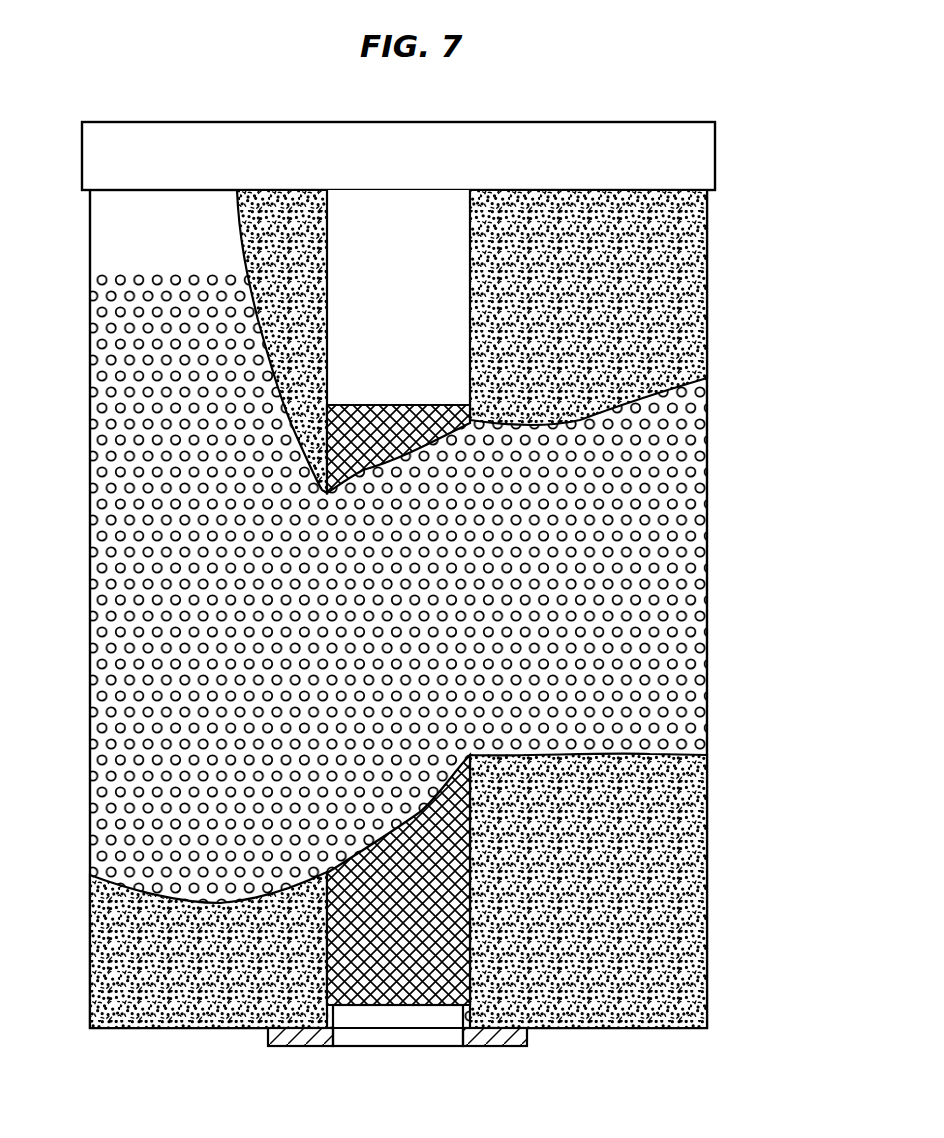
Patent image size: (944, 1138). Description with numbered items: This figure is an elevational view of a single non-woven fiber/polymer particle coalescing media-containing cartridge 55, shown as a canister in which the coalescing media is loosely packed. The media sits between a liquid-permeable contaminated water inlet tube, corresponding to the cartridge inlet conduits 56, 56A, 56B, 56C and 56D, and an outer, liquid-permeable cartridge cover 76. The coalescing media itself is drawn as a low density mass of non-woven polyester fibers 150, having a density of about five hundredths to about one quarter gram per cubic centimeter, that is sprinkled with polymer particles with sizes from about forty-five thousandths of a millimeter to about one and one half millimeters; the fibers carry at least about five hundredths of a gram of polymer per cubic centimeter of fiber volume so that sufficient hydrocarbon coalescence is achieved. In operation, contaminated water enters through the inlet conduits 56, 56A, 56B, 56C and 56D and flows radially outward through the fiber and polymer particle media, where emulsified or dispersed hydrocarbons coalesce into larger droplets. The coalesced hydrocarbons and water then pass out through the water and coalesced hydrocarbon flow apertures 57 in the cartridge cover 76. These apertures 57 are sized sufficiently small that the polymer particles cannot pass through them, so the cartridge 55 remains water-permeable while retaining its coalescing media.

The coalescing media-containing cartridge 55 is at (48, 374).
The cartridge cover 76 is at (90, 592).
The water and coalesced hydrocarbon flow apertures 57 is at (672, 531).
The polyester fibers 150 is at (663, 350).
The cartridge inlet conduit 56 is at (579, 705).
The cartridge inlet conduit 56A is at (579, 705).
The cartridge inlet conduit 56B is at (579, 705).
The cartridge inlet conduit 56C is at (579, 705).
The cartridge inlet conduit 56D is at (440, 831).